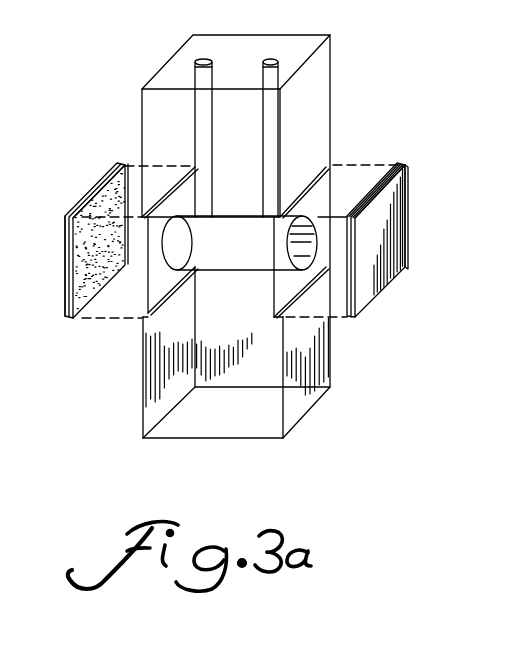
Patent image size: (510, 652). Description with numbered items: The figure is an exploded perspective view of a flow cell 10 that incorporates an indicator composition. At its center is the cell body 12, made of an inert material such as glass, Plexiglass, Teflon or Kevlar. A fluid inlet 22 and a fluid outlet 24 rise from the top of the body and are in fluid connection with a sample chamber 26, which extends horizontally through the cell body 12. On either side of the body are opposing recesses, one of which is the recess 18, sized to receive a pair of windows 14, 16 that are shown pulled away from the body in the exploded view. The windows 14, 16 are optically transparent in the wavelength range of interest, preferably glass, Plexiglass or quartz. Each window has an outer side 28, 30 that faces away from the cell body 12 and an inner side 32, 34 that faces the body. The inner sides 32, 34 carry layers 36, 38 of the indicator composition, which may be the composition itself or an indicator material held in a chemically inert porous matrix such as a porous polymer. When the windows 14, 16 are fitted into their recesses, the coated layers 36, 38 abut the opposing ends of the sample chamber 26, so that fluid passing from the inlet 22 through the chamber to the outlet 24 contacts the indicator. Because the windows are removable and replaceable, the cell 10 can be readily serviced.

The flow cell 10 is at (338, 28).
The cell body 12 is at (161, 72).
The window 14 is at (72, 216).
The window 16 is at (375, 285).
The recess 18 is at (147, 296).
The fluid inlet 22 is at (212, 62).
The fluid outlet 24 is at (281, 62).
The sample chamber 26 is at (304, 264).
The outer side 28 is at (101, 185).
The outer side 30 is at (424, 217).
The inner side 32 is at (67, 286).
The inner side 34 is at (400, 186).
The layer of indicator composition 36 is at (86, 241).
The layer of indicator composition 38 is at (403, 163).